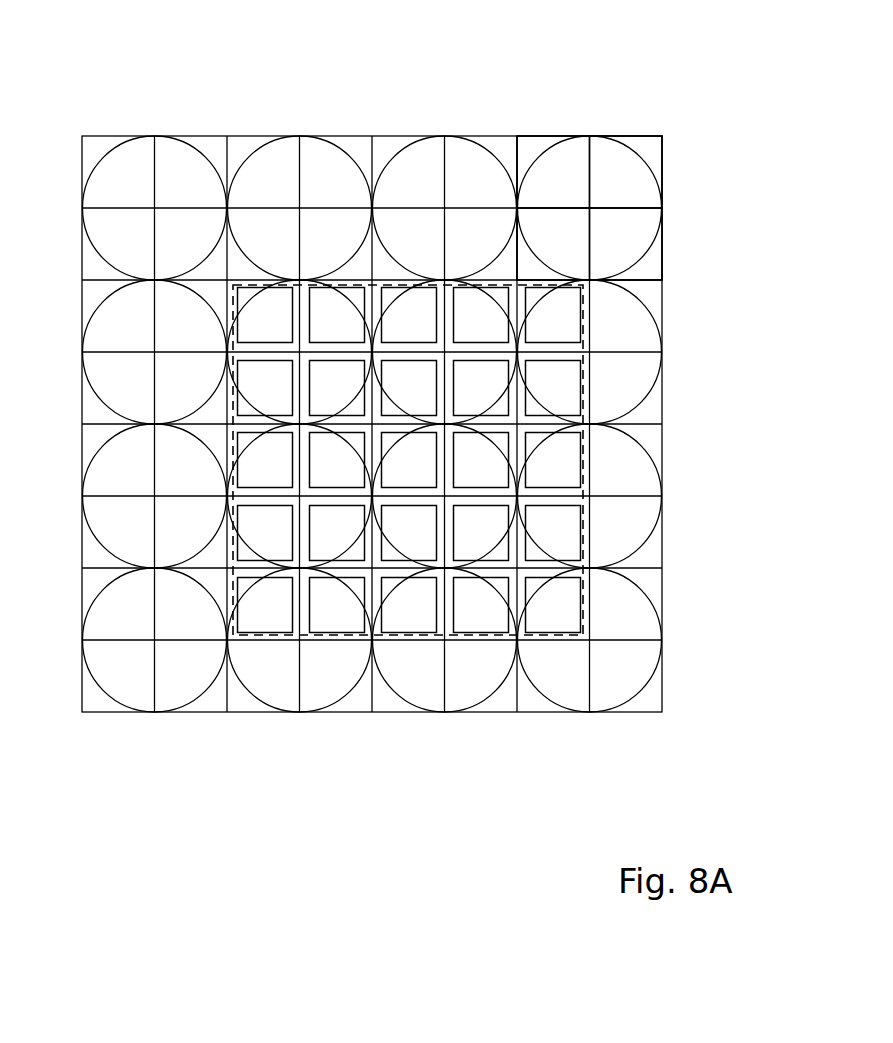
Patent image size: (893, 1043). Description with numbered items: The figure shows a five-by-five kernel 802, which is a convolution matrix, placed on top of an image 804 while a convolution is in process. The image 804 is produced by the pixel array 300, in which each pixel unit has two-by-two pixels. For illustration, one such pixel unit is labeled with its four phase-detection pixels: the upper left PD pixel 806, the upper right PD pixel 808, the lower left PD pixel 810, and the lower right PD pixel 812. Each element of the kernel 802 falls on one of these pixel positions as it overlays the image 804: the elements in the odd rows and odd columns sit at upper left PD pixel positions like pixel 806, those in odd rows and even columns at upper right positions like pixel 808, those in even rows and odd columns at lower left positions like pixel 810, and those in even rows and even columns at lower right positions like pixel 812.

The pixel array 300 is at (151, 68).
The kernel 802 is at (588, 337).
The image 804 is at (540, 135).
The upper left PD pixel 806 is at (576, 199).
The upper right PD pixel 808 is at (641, 199).
The lower left PD pixel 810 is at (576, 249).
The lower right PD pixel 812 is at (641, 249).